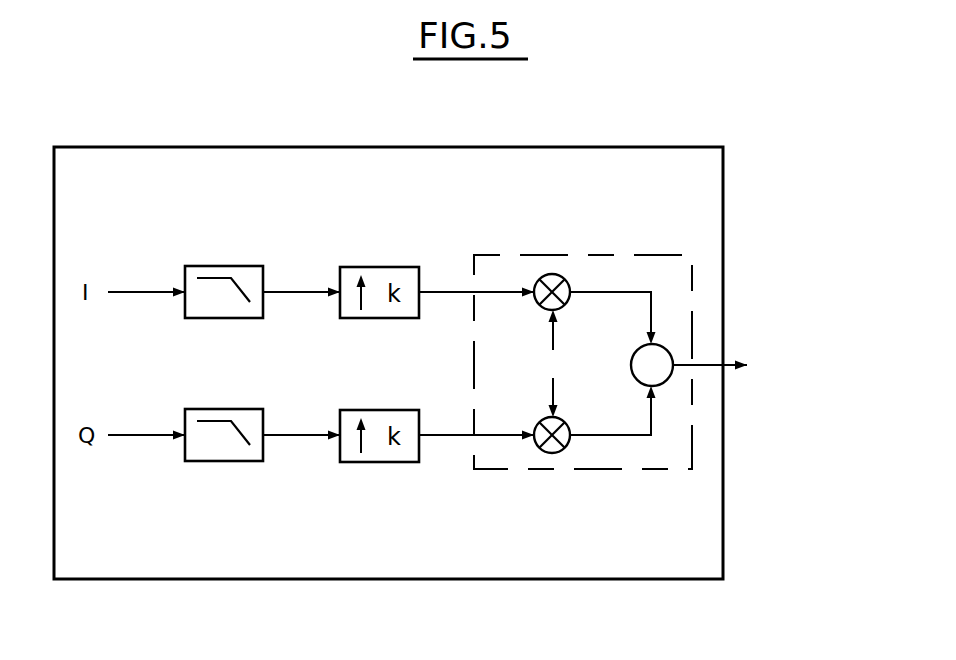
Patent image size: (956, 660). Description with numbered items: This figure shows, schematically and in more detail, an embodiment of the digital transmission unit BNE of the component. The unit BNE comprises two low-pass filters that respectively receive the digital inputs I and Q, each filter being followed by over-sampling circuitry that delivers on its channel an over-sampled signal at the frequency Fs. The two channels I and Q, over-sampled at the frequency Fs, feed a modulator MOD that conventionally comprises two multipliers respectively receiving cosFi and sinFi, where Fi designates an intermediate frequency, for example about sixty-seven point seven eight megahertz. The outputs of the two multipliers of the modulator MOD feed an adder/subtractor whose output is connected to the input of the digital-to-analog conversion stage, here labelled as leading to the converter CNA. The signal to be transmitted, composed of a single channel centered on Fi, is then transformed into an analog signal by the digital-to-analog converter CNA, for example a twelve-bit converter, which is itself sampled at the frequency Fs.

The digital transmission unit BNE is at (366, 146).
The modulator MOD is at (586, 252).
The frequency Fs is at (436, 288).
The digital-to-analog converter CNA is at (752, 365).